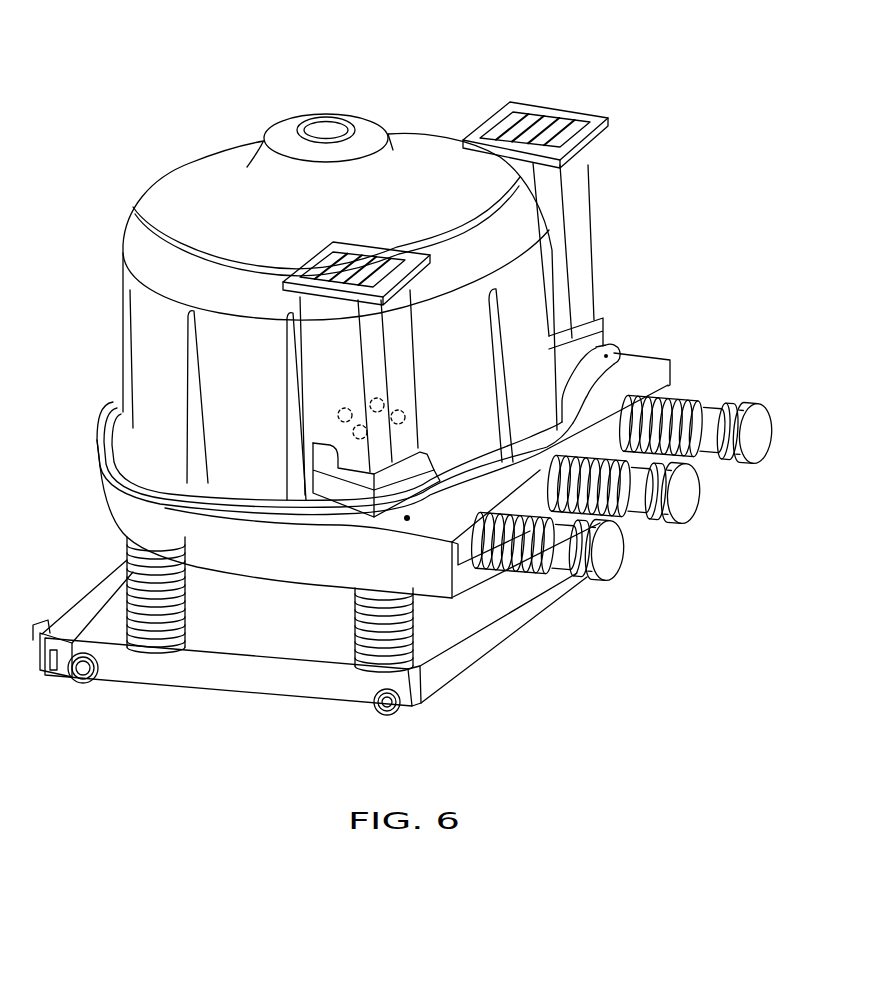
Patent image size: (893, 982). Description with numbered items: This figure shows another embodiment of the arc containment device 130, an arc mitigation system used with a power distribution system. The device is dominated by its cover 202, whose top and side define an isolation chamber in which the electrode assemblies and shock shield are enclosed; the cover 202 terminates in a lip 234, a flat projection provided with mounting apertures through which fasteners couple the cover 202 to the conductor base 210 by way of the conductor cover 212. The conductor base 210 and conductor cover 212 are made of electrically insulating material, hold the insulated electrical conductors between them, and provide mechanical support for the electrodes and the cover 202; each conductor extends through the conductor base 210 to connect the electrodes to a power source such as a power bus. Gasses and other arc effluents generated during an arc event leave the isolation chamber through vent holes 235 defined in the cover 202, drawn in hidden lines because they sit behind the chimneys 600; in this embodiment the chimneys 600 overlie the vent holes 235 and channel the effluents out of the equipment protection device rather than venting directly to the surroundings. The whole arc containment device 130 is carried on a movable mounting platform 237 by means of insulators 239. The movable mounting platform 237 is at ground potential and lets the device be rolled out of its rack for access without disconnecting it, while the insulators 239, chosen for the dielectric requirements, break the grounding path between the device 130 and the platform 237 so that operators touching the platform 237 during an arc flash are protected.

The arc containment device 130 is at (154, 120).
The cover 202 is at (437, 135).
The chimneys 600 is at (590, 207).
The vent holes 235 is at (343, 424).
The lip 234 is at (572, 420).
The conductor cover 212 is at (452, 540).
The conductor base 210 is at (432, 583).
The movable mounting platform 237 is at (178, 688).
The insulators 239 is at (130, 627).